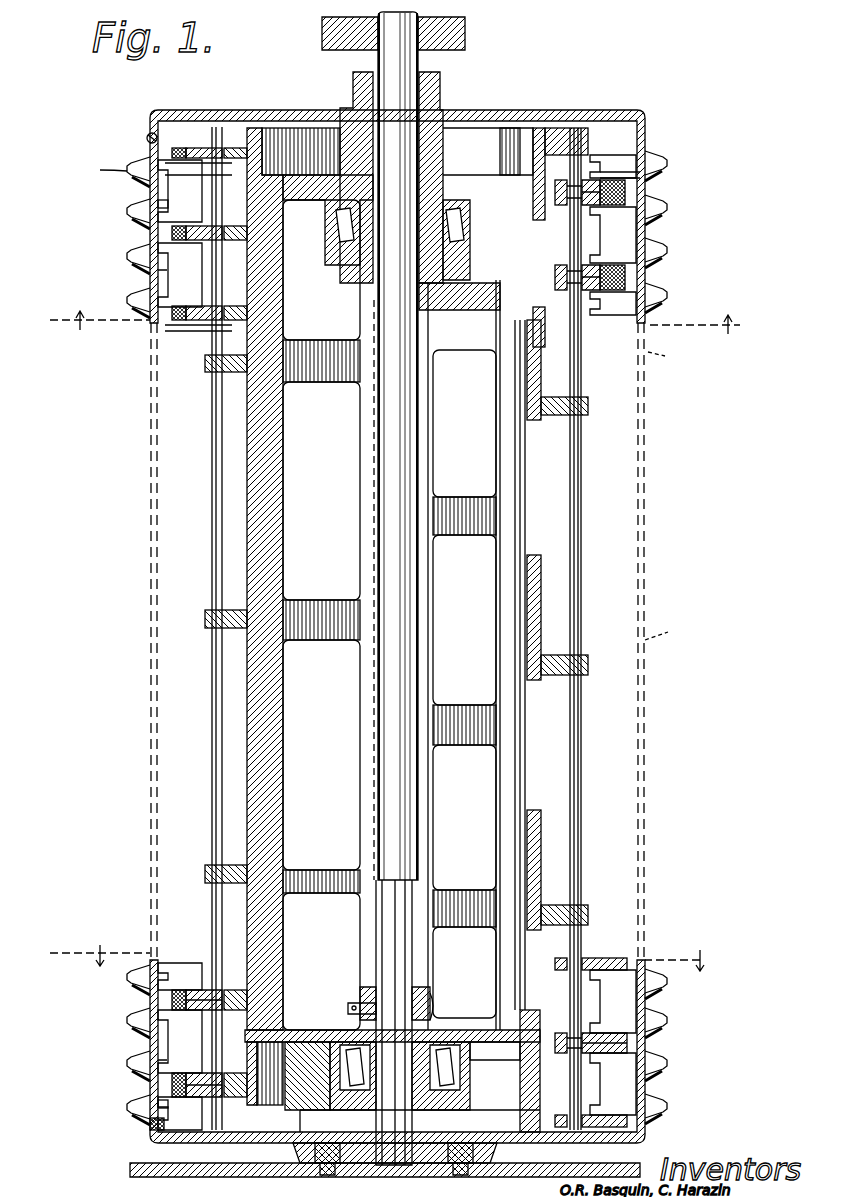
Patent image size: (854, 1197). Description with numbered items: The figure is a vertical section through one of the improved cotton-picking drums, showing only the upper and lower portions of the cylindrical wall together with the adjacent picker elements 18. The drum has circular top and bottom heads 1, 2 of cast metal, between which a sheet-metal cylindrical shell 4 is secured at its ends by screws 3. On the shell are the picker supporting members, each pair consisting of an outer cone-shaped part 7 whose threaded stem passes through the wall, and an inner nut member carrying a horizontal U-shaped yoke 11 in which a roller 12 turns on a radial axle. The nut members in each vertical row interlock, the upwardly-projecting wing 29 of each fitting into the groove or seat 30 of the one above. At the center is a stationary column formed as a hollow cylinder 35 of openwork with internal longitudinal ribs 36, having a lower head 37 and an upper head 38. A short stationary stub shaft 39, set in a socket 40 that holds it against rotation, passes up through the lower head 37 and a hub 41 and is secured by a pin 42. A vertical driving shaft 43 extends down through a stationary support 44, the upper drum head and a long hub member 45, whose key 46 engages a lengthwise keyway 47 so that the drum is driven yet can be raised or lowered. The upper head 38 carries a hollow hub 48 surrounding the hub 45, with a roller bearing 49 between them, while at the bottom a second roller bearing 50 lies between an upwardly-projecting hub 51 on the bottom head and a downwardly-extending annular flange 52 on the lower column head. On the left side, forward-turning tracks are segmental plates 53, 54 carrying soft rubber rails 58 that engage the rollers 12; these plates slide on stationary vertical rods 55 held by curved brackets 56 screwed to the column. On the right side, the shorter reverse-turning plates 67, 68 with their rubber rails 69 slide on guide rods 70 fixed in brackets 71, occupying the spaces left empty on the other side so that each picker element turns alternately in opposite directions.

The top head 1 is at (590, 110).
The bottom head 2 is at (262, 1146).
The screws 3 is at (146, 138).
The cylindrical shell 4 is at (373, 406).
The outer cone-shaped part 7 is at (140, 182).
The U-shaped extension or yoke 11 is at (190, 172).
The roller 12 is at (176, 1045).
The contact finger 18 is at (127, 167).
The upwardly-projecting wing 29 is at (160, 275).
The groove or seat 30 is at (160, 208).
The hollow cylinder 35 is at (322, 387).
The internal longitudinal ribs 36 is at (283, 520).
The lower head 37 is at (290, 1030).
The upper head 38 is at (520, 185).
The stub shaft 39 is at (382, 988).
The stationary socket 40 is at (432, 1165).
The hub 41 is at (428, 985).
The pin 42 is at (435, 1006).
The vertical driving shaft 43 is at (420, 70).
The stationary support 44 is at (322, 36).
The long hub member 45 is at (360, 290).
The key 46 is at (370, 85).
The keyway 47 is at (360, 445).
The hollow hub 48 is at (328, 262).
The roller bearing 49 is at (336, 225).
The second roller bearing 50 is at (275, 1085).
The upwardly-projecting hub 51 is at (418, 1050).
The downwardly-extending annular flange or hub 52 is at (312, 1042).
The segmental plates 53 is at (236, 222).
The segmental plates 54 is at (205, 148).
The stationary vertical rods 55 is at (212, 478).
The supporting brackets 56 is at (205, 365).
The curved rails 58 is at (178, 148).
The segmental plates 67 is at (558, 180).
The segmental plates 68 is at (562, 205).
The rubber rails 69 is at (610, 206).
The vertical guide rods 70 is at (575, 488).
The brackets 71 is at (590, 412).